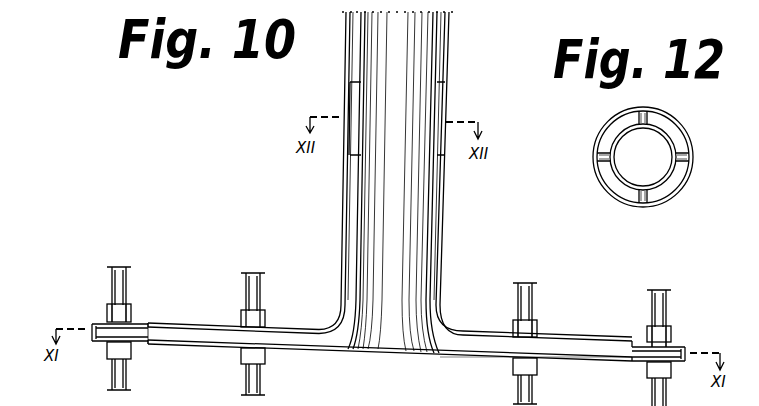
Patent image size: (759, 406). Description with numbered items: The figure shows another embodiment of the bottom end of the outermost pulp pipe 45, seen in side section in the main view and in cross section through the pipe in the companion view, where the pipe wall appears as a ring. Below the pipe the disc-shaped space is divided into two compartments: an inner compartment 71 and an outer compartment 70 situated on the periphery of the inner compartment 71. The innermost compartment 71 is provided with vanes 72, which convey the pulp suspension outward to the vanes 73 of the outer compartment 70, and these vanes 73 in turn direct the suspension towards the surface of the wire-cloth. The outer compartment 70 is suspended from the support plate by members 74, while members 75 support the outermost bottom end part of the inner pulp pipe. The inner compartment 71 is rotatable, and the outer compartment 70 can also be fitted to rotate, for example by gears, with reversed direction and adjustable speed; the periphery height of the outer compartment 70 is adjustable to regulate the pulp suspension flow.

In FIG. 10, the outermost pulp pipe 45 is at (437, 187).
In FIG. 12, the outermost pulp pipe 45 is at (609, 178).
In FIG. 10, the outer compartment 70 is at (641, 360).
In FIG. 10, the inner compartment 71 is at (567, 358).
In FIG. 10, the vanes 72 is at (210, 334).
In FIG. 10, the vanes 73 is at (125, 341).
In FIG. 10, the members 74 is at (529, 301).
In FIG. 10, the members 75 is at (517, 372).